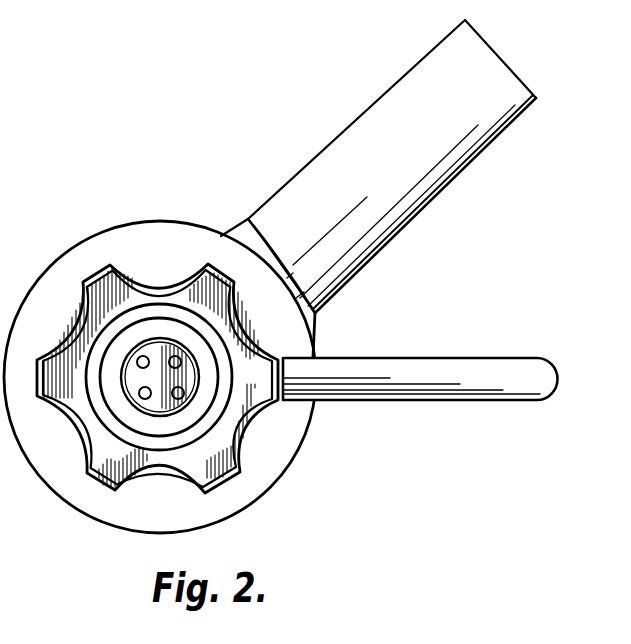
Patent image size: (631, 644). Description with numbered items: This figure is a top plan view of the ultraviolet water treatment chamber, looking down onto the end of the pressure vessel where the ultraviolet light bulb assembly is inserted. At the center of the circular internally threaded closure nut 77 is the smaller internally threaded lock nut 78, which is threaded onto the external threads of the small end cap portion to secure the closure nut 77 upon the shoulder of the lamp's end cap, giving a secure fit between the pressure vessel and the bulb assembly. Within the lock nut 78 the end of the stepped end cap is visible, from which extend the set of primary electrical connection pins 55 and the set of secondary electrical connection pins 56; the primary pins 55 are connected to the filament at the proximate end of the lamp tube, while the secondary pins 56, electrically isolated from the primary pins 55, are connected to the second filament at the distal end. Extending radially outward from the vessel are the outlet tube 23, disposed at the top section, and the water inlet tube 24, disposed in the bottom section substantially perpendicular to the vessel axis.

The outlet tube 23 is at (477, 327).
The water inlet tube 24 is at (376, 106).
The primary electrical connection pins 55 is at (183, 388).
The secondary electrical connection pins 56 is at (141, 388).
The closure nut 77 is at (223, 424).
The lock nut 78 is at (203, 405).